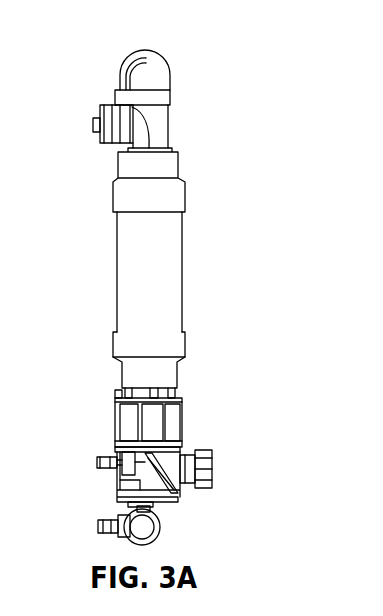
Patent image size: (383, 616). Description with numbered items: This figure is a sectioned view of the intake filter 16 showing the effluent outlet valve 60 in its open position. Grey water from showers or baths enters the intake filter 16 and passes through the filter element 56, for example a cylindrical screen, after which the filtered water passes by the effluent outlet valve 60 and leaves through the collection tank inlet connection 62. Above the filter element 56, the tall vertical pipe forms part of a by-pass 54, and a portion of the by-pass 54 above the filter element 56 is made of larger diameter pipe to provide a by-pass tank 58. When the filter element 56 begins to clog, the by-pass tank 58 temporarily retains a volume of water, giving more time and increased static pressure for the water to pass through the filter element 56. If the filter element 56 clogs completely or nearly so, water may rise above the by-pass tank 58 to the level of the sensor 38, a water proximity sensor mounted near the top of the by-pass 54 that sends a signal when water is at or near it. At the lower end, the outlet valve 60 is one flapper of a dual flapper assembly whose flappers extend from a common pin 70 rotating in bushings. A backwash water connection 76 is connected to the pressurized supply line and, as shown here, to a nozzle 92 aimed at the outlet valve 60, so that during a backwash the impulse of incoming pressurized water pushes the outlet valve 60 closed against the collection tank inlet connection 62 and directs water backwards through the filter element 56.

The intake filter 16 is at (254, 238).
The by-pass 54 is at (157, 53).
The sensor 38 is at (93, 123).
The by-pass tank 58 is at (118, 273).
The filter element 56 is at (183, 452).
The effluent outlet valve 60 is at (165, 425).
The collection tank inlet connection 62 is at (212, 468).
The backwash water connection 76 is at (97, 462).
The nozzle 92 is at (137, 487).
The common pin 70 is at (177, 493).